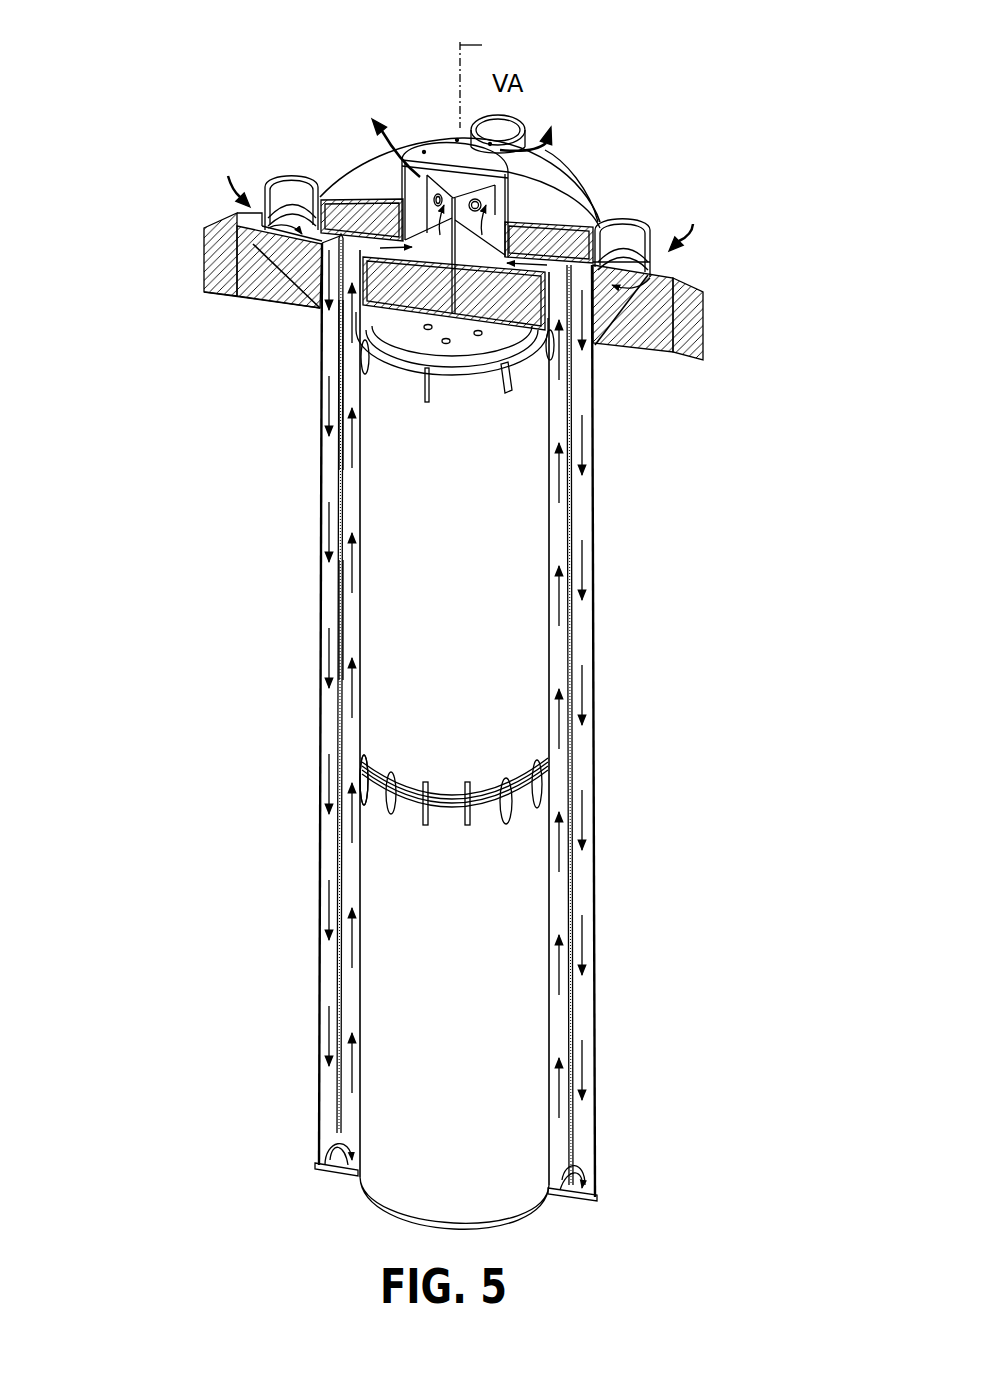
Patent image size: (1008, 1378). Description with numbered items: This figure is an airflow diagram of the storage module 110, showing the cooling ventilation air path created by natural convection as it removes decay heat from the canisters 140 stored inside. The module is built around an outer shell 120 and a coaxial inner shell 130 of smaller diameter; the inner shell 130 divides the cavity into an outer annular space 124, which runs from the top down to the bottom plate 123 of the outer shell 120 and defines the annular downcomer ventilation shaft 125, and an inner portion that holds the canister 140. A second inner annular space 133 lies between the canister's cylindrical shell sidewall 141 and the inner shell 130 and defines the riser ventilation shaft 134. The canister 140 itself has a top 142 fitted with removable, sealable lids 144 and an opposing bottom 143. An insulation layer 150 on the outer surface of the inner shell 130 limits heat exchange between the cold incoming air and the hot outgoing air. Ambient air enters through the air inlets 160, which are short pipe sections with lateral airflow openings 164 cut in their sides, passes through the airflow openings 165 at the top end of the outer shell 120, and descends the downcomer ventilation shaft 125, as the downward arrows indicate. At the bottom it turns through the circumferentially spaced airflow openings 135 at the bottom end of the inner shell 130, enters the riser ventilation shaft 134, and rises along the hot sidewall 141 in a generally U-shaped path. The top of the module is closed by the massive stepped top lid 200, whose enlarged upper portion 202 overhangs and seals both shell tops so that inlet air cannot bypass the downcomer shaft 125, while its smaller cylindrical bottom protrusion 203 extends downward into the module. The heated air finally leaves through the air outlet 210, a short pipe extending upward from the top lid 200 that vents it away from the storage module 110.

The storage module 110 is at (206, 108).
The outer shell 120 is at (322, 862).
The bottom plate 123 is at (565, 1200).
The outer annular space 124 is at (332, 975).
The downcomer ventilation shaft 125 is at (348, 740).
The inner shell 130 is at (343, 857).
The second inner annular space 133 is at (343, 484).
The riser ventilation shaft 134 is at (363, 765).
The airflow openings 135 is at (345, 1176).
The canister 140 is at (490, 583).
The cylindrical shell sidewall 141 is at (563, 524).
The top 142 is at (472, 350).
The bottom 143 is at (486, 787).
The lids 144 is at (418, 338).
The insulation layer 150 is at (337, 617).
The air inlets 160 is at (302, 178).
The lateral airflow openings 164 is at (648, 255).
The airflow openings 165 is at (338, 240).
The top lid 200 is at (567, 165).
The upper portion 202 is at (573, 193).
The bottom protrusion 203 is at (532, 295).
The air outlet 210 is at (436, 126).